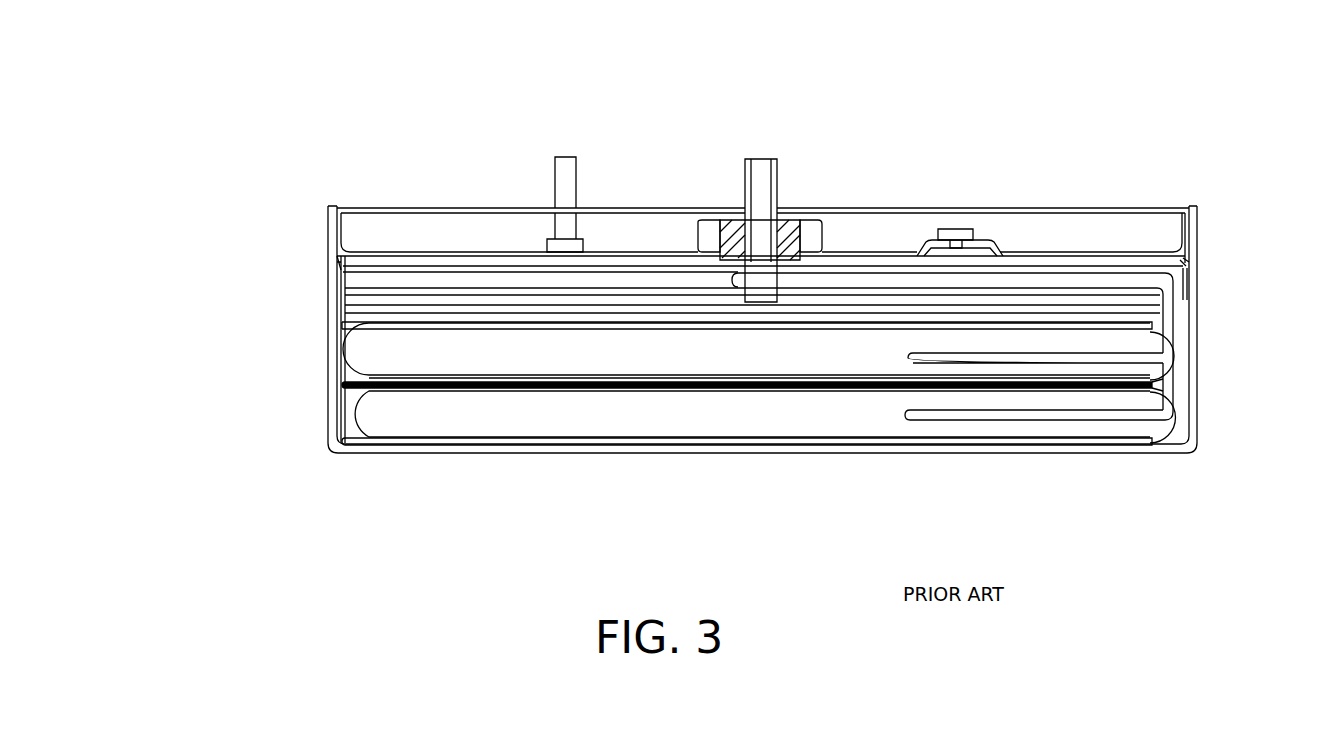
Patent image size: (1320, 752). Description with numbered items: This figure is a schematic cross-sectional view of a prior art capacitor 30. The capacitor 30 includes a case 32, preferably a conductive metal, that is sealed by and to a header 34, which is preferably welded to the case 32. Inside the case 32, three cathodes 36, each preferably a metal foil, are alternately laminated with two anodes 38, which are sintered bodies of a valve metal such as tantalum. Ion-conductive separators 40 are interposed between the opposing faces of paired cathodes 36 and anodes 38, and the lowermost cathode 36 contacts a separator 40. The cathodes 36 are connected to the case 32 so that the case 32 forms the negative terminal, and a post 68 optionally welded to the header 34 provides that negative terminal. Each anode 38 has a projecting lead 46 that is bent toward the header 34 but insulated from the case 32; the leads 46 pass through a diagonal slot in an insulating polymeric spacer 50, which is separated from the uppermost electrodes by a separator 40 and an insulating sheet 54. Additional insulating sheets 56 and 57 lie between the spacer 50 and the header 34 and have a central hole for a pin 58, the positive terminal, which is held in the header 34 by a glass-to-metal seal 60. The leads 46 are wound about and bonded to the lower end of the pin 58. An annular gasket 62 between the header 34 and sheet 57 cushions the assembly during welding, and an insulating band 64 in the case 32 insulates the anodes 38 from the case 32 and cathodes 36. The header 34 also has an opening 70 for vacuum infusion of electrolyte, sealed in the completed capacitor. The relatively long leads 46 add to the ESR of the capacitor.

The capacitor 30 is at (942, 73).
The case 32 is at (1193, 302).
The header 34 is at (1178, 243).
The cathode 36 is at (353, 327).
The anode 38 is at (864, 368).
The separator 40 is at (347, 322).
The projecting lead 46 is at (1168, 387).
The insulating spacer 50 is at (360, 293).
The insulating sheet 54 is at (1172, 312).
The insulating sheet 56 is at (335, 270).
The insulating sheet 57 is at (372, 264).
The pin 58 is at (758, 178).
The glass-to-metal seal 60 is at (790, 240).
The annular gasket 62 is at (1183, 267).
The insulating band 64 is at (1185, 285).
The post 68 is at (568, 155).
The opening 70 is at (985, 252).